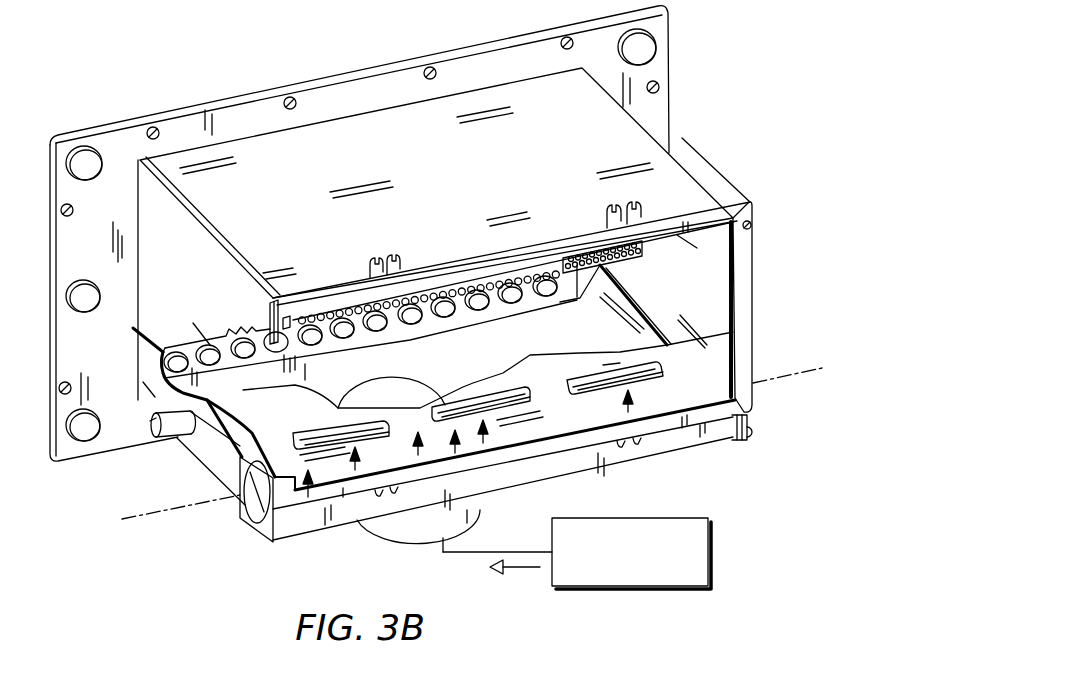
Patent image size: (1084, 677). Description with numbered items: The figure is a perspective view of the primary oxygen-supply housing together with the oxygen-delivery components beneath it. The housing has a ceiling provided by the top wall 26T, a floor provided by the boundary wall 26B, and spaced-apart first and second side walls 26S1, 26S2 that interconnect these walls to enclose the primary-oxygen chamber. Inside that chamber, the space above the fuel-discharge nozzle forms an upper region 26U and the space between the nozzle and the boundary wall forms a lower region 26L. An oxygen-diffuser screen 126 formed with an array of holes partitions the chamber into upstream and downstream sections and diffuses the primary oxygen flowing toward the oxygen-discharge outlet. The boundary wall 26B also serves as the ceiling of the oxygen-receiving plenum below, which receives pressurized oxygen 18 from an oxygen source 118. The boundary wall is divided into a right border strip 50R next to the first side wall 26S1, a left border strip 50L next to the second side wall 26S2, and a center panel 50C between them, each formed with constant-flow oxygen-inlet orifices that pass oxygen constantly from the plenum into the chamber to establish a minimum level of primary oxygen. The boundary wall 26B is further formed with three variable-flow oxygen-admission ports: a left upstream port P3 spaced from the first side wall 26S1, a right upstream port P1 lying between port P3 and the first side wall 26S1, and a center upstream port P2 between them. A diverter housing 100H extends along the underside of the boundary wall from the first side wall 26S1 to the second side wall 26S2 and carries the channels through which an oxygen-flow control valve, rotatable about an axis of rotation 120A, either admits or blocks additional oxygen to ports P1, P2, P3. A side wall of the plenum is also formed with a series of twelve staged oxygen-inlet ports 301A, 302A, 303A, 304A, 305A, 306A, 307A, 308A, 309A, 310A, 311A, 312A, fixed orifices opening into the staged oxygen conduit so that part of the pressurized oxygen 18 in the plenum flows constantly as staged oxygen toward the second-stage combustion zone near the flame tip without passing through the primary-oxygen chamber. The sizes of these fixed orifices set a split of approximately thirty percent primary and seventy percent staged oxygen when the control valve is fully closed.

The top wall 26T is at (367, 136).
The upper region 26U is at (728, 260).
The first side wall 26S1 is at (701, 310).
The second side wall 26S2 is at (184, 308).
The boundary wall 26B is at (677, 387).
The lower region 26L is at (418, 463).
The staged oxygen-inlet port 301A is at (548, 268).
The staged oxygen-inlet port 302A is at (514, 304).
The staged oxygen-inlet port 303A is at (472, 276).
The staged oxygen-inlet port 304A is at (450, 316).
The staged oxygen-inlet port 305A is at (396, 268).
The staged oxygen-inlet port 306A is at (378, 331).
The staged oxygen-inlet port 307A is at (341, 312).
The staged oxygen-inlet port 308A is at (250, 358).
The staged oxygen-inlet port 309A is at (283, 297).
The staged oxygen-inlet port 310A is at (246, 358).
The staged oxygen-inlet port 311A is at (205, 345).
The staged oxygen-inlet port 312A is at (162, 350).
The oxygen-diffuser screen 126 is at (643, 257).
The axis of rotation 120A is at (178, 510).
The left border strip 50L is at (305, 538).
The right border strip 50R is at (682, 440).
The center panel 50C is at (480, 540).
The diverter housing 100H is at (716, 380).
The right upstream oxygen-admission port P1 is at (631, 413).
The center upstream oxygen-admission port P2 is at (486, 444).
The left upstream oxygen-admission port P3 is at (356, 471).
The pressurized oxygen 18 is at (525, 569).
The oxygen source 118 is at (712, 542).